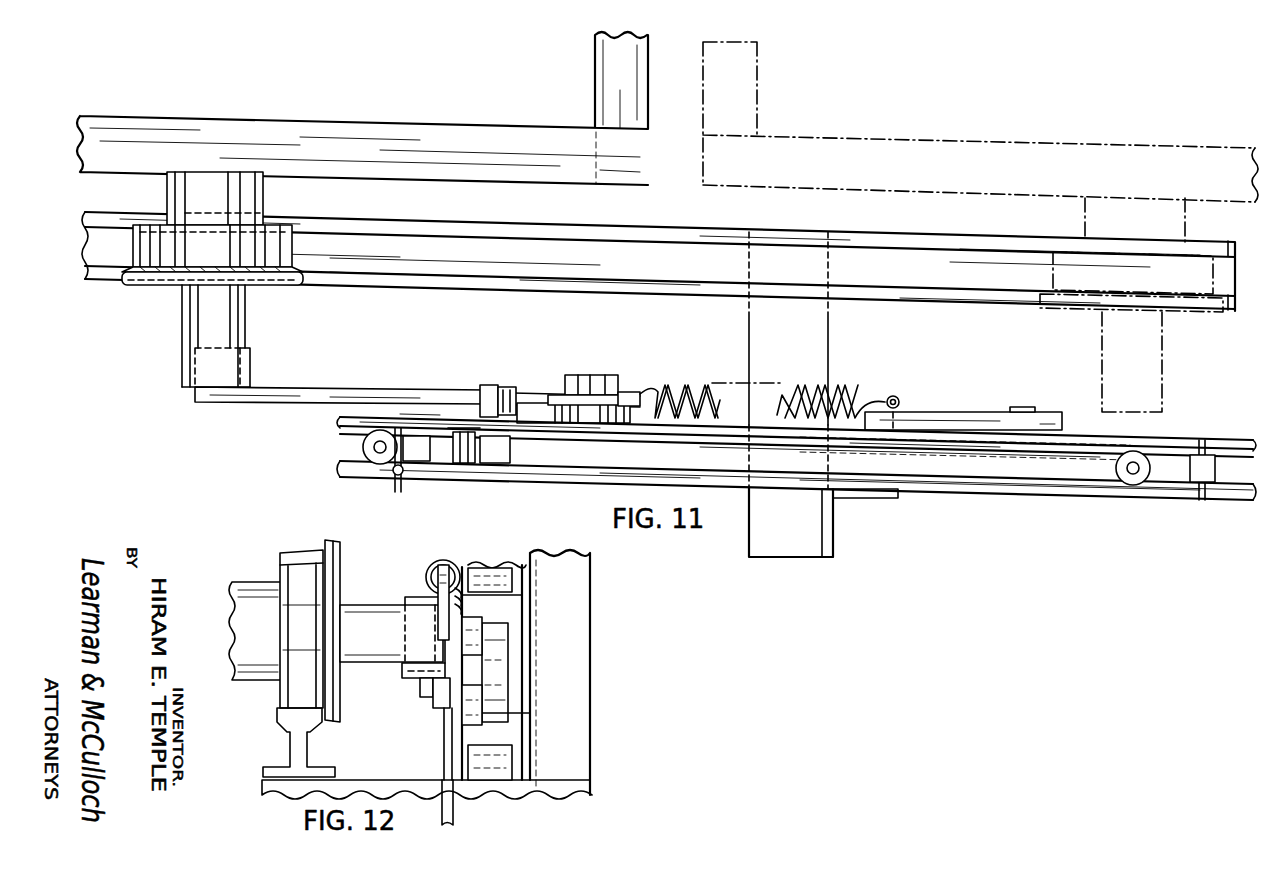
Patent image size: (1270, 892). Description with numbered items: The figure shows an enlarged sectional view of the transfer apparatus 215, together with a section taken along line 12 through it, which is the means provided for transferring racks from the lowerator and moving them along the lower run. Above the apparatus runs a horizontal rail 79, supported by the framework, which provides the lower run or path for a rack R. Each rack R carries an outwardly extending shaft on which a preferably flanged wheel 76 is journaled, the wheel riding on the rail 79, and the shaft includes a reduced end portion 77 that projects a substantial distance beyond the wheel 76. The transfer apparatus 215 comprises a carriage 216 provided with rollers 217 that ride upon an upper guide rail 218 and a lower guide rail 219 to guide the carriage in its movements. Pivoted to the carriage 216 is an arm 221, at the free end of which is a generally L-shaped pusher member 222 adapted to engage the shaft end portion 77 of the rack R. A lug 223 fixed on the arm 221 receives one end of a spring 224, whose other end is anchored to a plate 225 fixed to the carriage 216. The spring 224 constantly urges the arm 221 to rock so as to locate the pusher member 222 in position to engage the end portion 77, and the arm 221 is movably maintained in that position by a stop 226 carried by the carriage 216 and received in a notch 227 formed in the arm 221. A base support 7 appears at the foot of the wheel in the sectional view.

In FIG. 11, the rack R is at (426, 180).
In FIG. 11, the section line 12— 12 is at (108, 480).
In FIG. 12, the base support 7 is at (312, 760).
In FIG. 11, the flanged wheel 76 is at (292, 259).
In FIG. 12, the flanged wheel 76 is at (293, 564).
In FIG. 11, the reduced end portion 77 is at (226, 326).
In FIG. 12, the reduced end portion 77 is at (368, 608).
In FIG. 11, the rail 79 is at (456, 270).
In FIG. 11, the transfer apparatus 215 is at (925, 506).
In FIG. 11, the carriage 216 is at (963, 472).
In FIG. 12, the carriage 216 is at (508, 690).
In FIG. 11, the rollers 217 is at (398, 492).
In FIG. 12, the rollers 217 is at (482, 640).
In FIG. 11, the upper guide rail 218 is at (350, 447).
In FIG. 12, the upper guide rail 218 is at (506, 564).
In FIG. 12, the lower guide rail 219 is at (500, 750).
In FIG. 11, the arm 221 is at (390, 396).
In FIG. 12, the arm 221 is at (432, 704).
In FIG. 11, the pusher member 222 is at (251, 367).
In FIG. 12, the pusher member 222 is at (412, 680).
In FIG. 11, the lug 223 is at (621, 394).
In FIG. 12, the lug 223 is at (428, 584).
In FIG. 11, the spring 224 is at (686, 392).
In FIG. 12, the spring 224 is at (452, 560).
In FIG. 11, the plate 225 is at (922, 414).
In FIG. 11, the stop 226 is at (499, 392).
In FIG. 11, the notch 227 is at (485, 388).